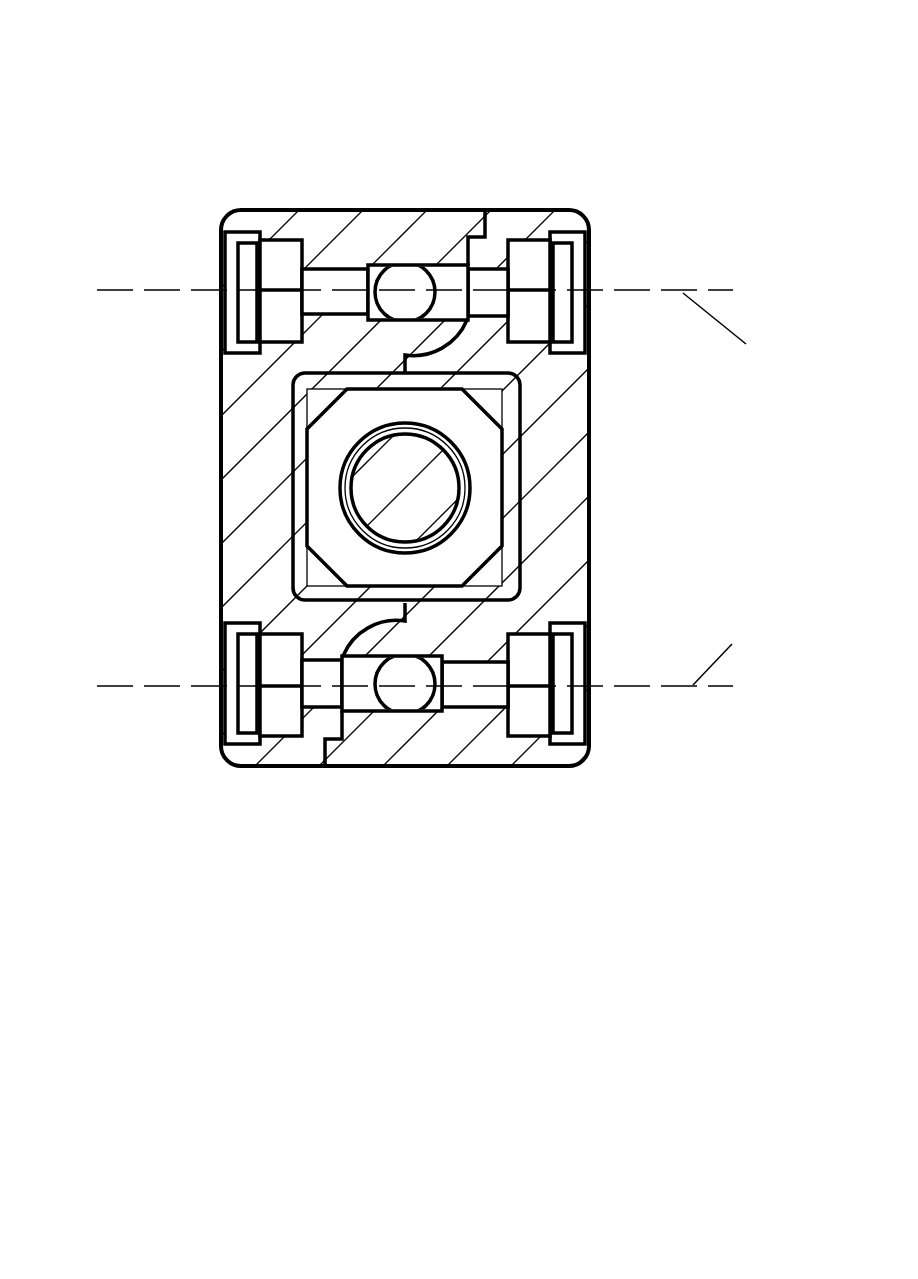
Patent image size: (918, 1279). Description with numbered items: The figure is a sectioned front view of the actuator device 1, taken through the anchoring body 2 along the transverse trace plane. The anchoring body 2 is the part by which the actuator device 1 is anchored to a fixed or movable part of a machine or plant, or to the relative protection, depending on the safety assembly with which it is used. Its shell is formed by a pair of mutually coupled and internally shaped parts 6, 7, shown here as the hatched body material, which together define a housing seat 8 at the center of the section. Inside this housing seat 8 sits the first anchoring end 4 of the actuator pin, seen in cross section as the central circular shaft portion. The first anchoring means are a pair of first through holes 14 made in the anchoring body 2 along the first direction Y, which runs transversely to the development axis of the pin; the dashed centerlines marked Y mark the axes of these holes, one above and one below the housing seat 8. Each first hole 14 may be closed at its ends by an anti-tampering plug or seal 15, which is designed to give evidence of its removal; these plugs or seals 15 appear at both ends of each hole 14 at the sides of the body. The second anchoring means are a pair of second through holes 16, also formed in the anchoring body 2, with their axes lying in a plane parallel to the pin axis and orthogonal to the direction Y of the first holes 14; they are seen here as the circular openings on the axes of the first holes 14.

The actuator device 1 is at (645, 109).
The anchoring body 2 is at (214, 178).
The first anchoring end 4 is at (443, 473).
The first shell part 6 is at (250, 466).
The second shell part 7 is at (547, 762).
The housing seat 8 is at (482, 406).
The first through holes 14 is at (485, 284).
The anti-tampering plug or seal 15 is at (234, 268).
The second through holes 16 is at (404, 283).